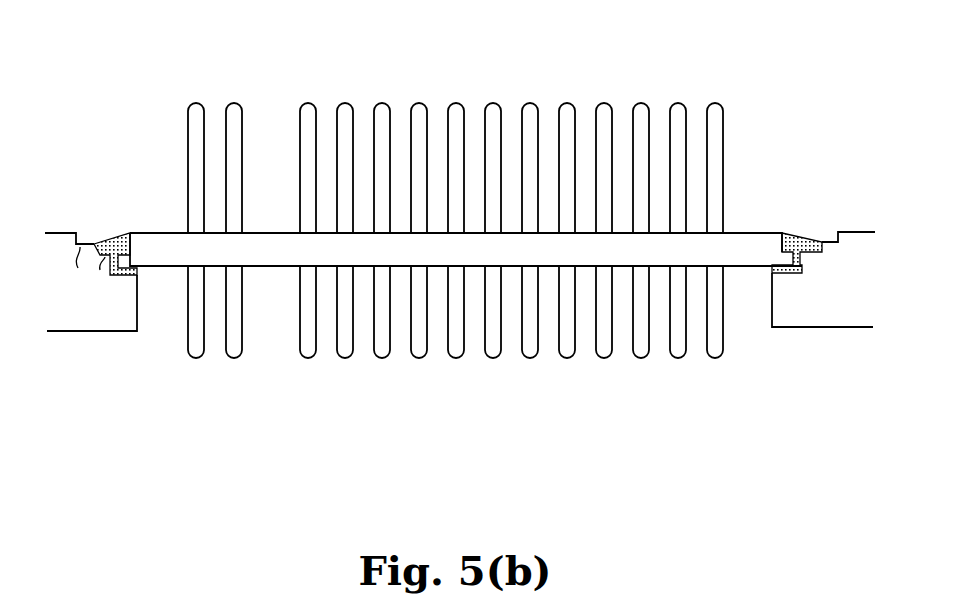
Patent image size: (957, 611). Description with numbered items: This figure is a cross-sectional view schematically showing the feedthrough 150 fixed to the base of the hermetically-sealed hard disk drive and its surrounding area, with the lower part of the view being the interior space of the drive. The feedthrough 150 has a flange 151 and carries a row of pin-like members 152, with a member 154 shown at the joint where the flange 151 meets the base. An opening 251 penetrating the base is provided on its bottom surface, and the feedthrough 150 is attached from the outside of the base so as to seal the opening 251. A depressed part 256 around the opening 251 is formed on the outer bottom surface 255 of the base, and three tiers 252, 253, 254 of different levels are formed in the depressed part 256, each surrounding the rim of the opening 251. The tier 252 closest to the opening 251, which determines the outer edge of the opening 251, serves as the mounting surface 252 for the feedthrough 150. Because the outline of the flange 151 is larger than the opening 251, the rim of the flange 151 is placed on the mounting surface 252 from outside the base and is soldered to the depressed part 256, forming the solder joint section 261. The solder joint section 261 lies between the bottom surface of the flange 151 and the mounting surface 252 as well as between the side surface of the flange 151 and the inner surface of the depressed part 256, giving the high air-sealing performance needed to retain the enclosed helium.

The feedthrough 150 is at (466, 263).
The flange 151 is at (747, 232).
The fins 152 is at (713, 102).
The fixing portion 154 is at (122, 233).
The opening 251 is at (762, 320).
The mounting surface 252 is at (140, 278).
The tier 253 is at (100, 270).
The tier 254 is at (78, 270).
The outer bottom surface 255 is at (850, 323).
The depressed part 256 is at (98, 221).
The solder joint section 261 is at (803, 235).